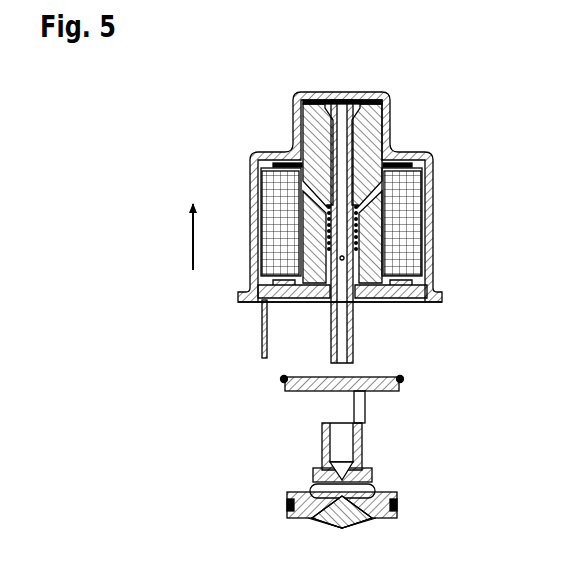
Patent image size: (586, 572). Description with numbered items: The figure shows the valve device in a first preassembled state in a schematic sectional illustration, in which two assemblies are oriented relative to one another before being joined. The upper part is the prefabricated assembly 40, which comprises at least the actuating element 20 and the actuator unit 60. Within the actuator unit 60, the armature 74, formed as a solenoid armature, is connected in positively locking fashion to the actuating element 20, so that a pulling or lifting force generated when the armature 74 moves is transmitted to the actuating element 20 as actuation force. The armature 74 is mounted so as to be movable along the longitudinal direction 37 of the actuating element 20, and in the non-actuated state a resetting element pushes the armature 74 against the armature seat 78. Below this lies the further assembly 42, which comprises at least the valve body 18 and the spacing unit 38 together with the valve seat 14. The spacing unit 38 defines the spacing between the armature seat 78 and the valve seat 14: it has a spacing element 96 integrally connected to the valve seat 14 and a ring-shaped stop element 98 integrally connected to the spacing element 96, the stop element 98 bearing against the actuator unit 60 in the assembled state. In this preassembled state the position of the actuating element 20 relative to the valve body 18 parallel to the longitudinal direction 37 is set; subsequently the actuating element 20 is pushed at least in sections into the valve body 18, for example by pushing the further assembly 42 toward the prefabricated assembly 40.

The prefabricated assembly 40 is at (232, 109).
The actuator unit 60 is at (422, 142).
The armature 74 is at (313, 140).
The armature seat 78 is at (377, 230).
The actuating element 20 is at (357, 340).
The longitudinal direction 37 is at (193, 248).
The stop element 98 is at (290, 377).
The spacing element 96 is at (366, 407).
The spacing unit 38 is at (378, 426).
The valve body 18 is at (325, 450).
The further assembly 42 is at (320, 533).
The valve seat 14 is at (389, 512).